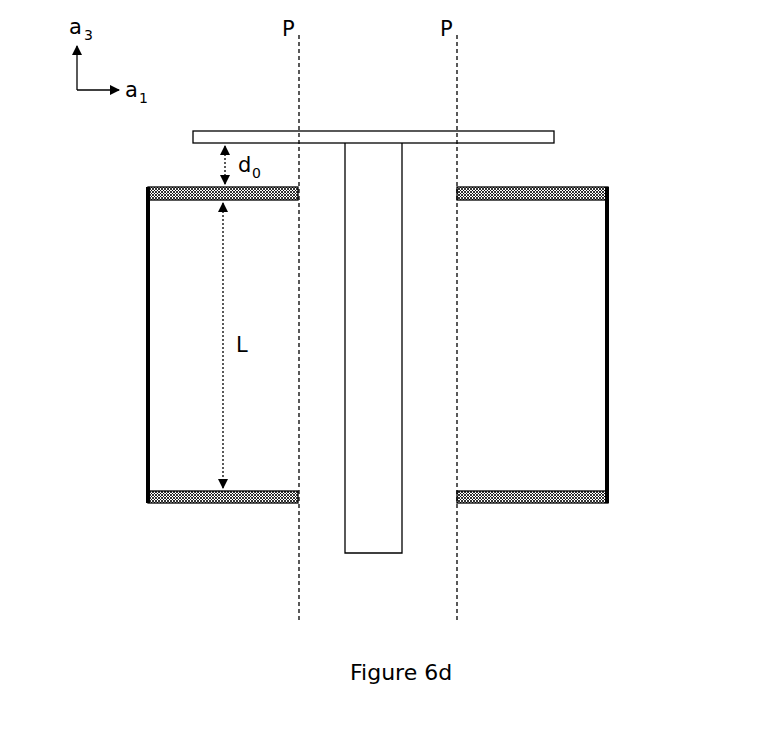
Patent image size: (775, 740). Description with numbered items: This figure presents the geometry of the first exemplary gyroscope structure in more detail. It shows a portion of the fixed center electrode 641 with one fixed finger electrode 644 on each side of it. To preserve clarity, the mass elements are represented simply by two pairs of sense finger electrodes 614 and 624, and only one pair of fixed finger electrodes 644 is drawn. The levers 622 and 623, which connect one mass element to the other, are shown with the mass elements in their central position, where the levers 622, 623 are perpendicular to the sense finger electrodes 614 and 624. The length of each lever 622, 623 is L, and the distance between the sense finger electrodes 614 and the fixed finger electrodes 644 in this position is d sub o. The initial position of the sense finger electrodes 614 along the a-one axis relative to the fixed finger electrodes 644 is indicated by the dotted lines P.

The sense finger electrodes 614 is at (166, 185).
The lever 622 is at (140, 376).
The lever 623 is at (614, 348).
The sense finger electrodes 624 is at (212, 506).
The fixed center electrode 641 is at (372, 163).
The fixed finger electrodes 644 is at (243, 128).